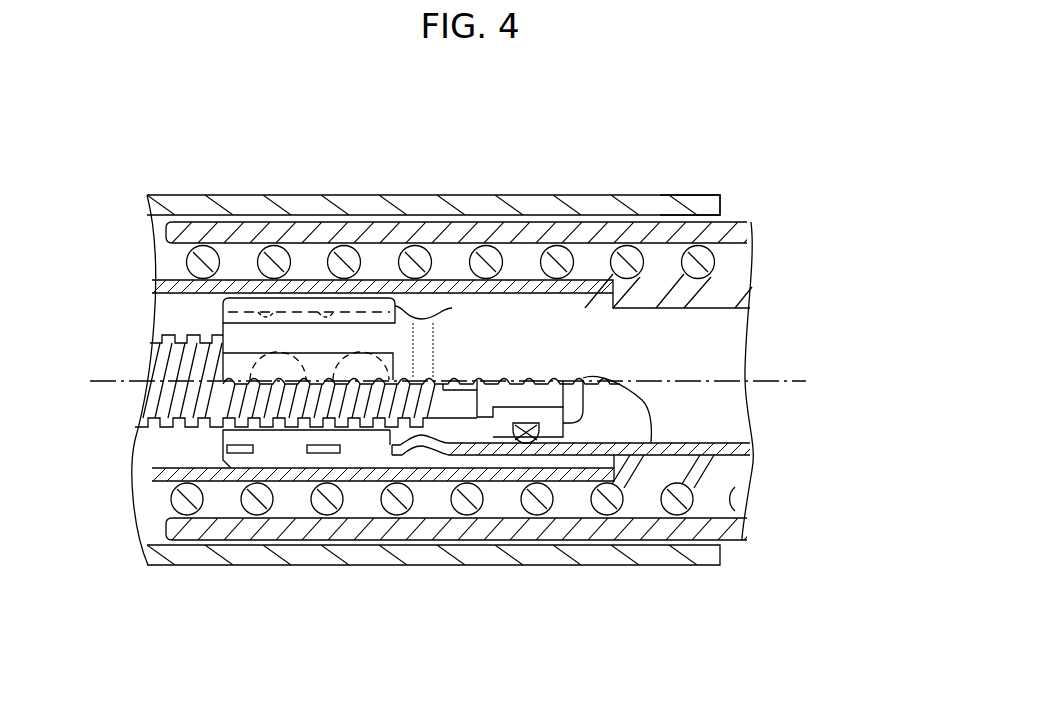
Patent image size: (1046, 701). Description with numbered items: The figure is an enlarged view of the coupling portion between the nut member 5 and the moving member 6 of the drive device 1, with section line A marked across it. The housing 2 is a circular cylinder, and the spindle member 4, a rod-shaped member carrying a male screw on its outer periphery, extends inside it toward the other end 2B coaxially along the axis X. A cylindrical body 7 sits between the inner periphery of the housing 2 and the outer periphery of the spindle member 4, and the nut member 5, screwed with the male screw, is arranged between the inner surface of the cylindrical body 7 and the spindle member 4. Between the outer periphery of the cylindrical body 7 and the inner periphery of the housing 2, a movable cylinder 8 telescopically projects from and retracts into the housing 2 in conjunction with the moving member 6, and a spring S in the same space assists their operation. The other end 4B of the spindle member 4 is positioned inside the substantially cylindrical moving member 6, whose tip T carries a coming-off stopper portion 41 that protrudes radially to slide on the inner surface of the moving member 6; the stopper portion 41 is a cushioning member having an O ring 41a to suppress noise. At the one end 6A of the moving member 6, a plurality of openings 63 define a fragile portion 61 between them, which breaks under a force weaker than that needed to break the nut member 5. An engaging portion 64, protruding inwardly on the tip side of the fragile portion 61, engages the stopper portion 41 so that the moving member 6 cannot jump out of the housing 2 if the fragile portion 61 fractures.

The drive device 1 is at (804, 134).
The housing 2 is at (268, 207).
The other end of the housing 2B is at (699, 196).
The spindle member 4 is at (173, 390).
The other end of the spindle member 4B is at (463, 408).
The nut member 5 is at (366, 303).
The moving member 6 is at (648, 340).
The one end of the moving member 6A is at (404, 307).
The cylindrical body 7 is at (174, 563).
The movable cylinder 8 is at (708, 531).
The coming-off stopper portion 41 is at (498, 421).
The O ring 41a is at (541, 436).
The fragile portion 61 is at (280, 345).
The openings 63 is at (366, 345).
The engaging portion 64 is at (423, 446).
The spring S is at (203, 262).
The tip T is at (571, 412).
The axis X is at (786, 381).
The section line A- A is at (365, 178).